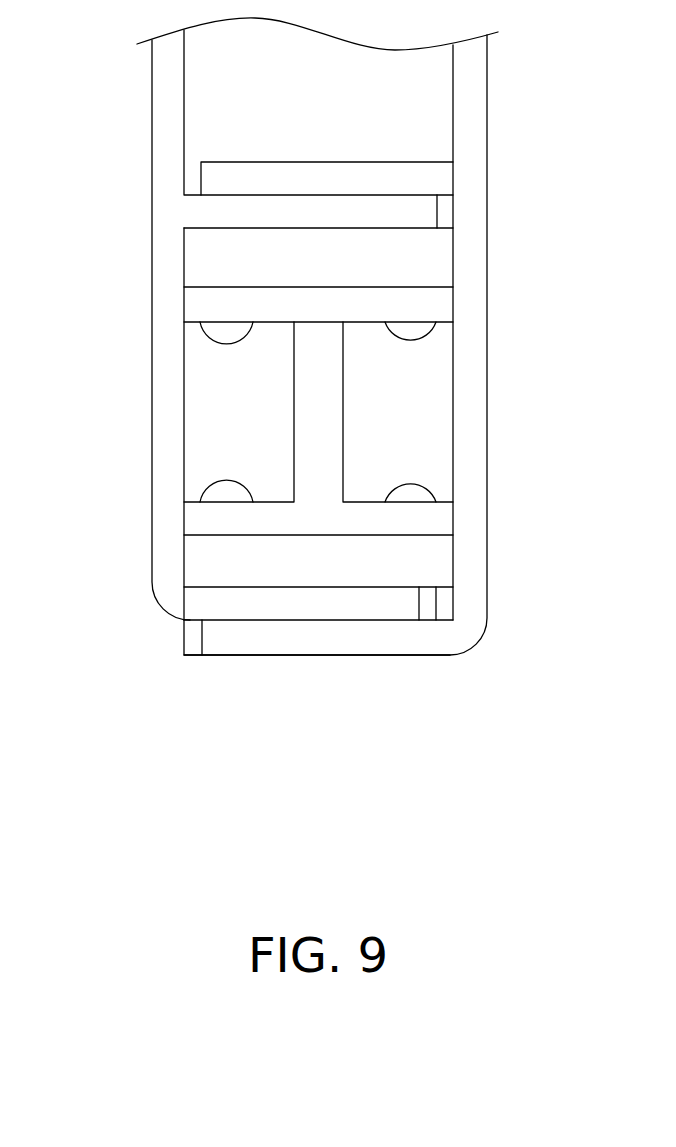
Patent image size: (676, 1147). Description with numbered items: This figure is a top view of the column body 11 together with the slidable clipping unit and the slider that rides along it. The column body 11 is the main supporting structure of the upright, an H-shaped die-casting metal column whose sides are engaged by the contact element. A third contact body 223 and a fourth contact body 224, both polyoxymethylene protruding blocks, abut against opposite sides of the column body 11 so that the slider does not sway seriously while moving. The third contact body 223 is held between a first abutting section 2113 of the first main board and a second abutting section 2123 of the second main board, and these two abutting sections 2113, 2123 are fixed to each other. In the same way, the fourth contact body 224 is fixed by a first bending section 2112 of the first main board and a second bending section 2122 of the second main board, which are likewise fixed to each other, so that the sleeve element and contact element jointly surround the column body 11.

The column body 11 is at (197, 302).
The third contact body 223 is at (431, 257).
The fourth contact body 224 is at (442, 560).
The first abutting section 2113 is at (211, 213).
The first bending section 2112 is at (211, 605).
The second bending section 2122 is at (341, 641).
The second abutting section 2123 is at (347, 173).